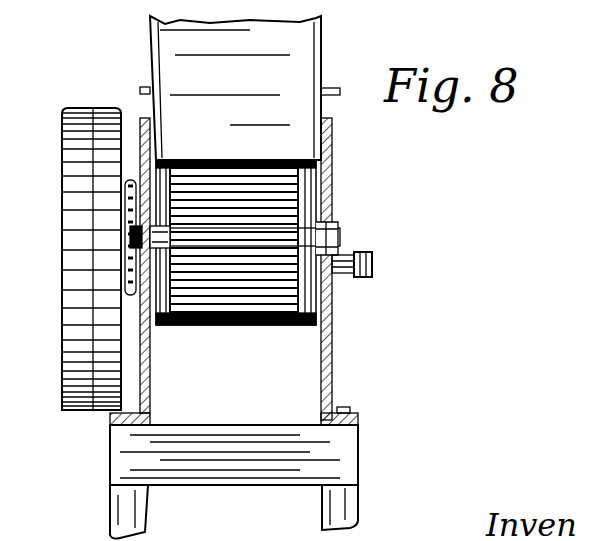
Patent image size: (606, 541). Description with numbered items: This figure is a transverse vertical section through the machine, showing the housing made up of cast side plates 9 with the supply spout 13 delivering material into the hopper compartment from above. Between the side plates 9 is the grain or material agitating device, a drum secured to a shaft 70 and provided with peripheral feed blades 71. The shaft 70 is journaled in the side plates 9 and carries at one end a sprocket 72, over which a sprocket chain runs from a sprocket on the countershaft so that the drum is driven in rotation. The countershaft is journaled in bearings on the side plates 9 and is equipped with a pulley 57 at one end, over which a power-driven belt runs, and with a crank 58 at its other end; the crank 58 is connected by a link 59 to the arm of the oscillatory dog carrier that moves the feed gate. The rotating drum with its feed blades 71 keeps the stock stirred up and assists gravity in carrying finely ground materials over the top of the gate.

The side plates 9 is at (332, 166).
The supply spout 13 is at (300, 72).
The pulley 57 is at (80, 258).
The crank 58 is at (372, 268).
The link 59 is at (368, 258).
The shaft 70 is at (325, 232).
The peripheral feed blades 71 is at (228, 188).
The sprocket 72 is at (125, 205).